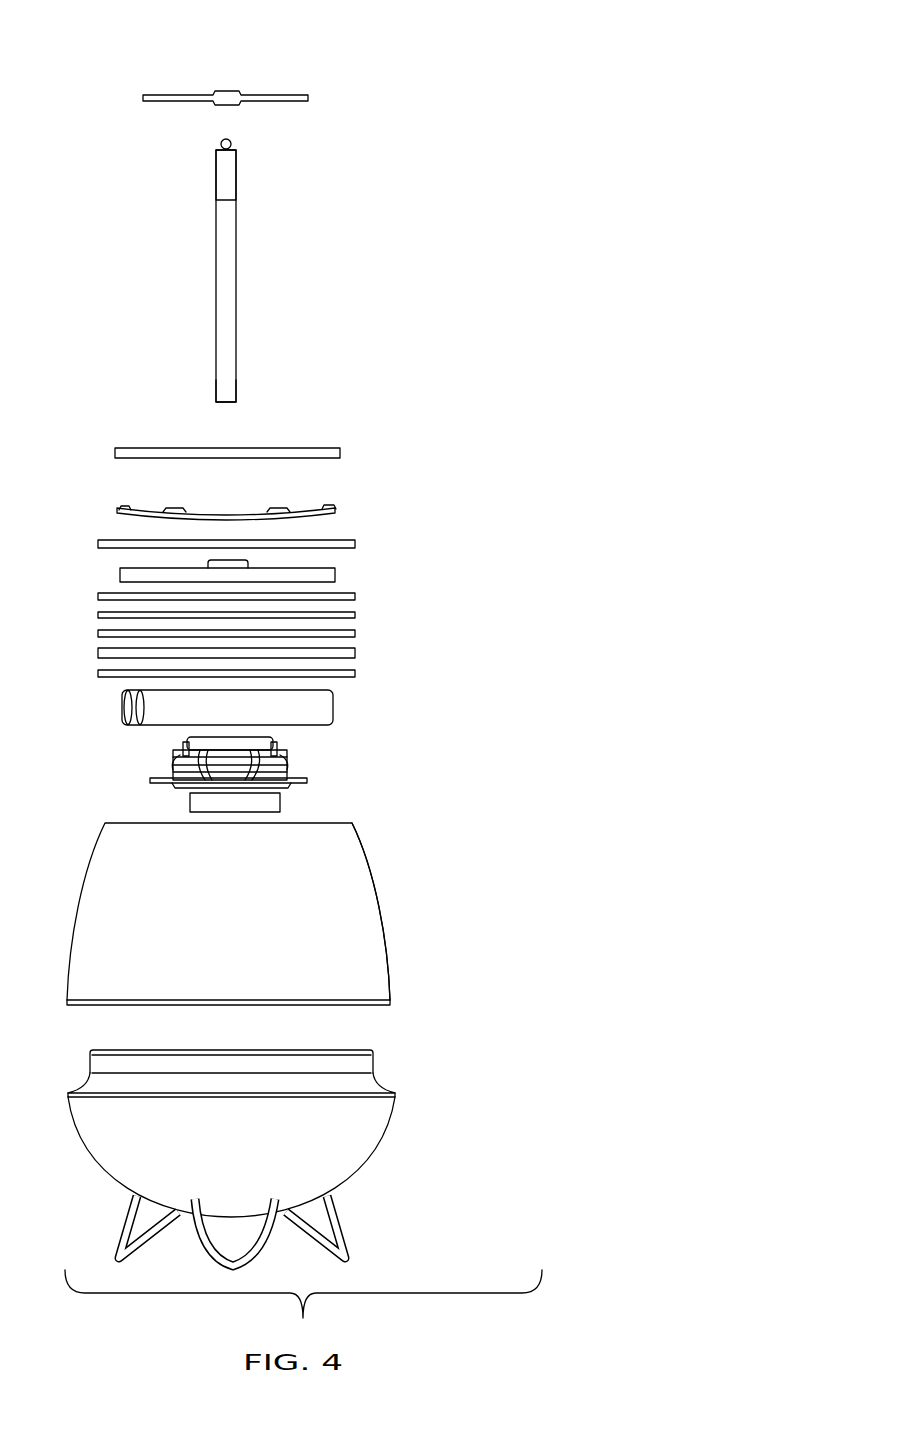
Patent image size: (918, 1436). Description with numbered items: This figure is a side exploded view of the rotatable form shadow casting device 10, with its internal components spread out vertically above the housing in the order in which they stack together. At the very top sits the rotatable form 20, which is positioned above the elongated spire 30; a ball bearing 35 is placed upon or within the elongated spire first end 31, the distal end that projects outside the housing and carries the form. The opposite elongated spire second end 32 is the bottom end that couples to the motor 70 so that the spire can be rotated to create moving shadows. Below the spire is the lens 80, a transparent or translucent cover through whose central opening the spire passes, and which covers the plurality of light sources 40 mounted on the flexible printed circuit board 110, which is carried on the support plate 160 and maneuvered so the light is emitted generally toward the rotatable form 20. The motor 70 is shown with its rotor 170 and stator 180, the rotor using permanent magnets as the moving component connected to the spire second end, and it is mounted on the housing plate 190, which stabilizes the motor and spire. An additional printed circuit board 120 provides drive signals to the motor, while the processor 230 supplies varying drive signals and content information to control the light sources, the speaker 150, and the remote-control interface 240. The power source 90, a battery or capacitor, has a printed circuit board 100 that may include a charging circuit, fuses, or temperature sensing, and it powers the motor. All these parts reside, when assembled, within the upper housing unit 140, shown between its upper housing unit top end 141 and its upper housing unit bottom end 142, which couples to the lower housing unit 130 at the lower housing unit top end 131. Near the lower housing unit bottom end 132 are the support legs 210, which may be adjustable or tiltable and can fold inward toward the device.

The rotatable form shadow casting device 10 is at (553, 72).
The rotatable form 20 is at (308, 97).
The elongated spire 30 is at (237, 268).
The elongated spire first end 31 is at (245, 174).
The elongated spire second end 32 is at (248, 401).
The ball bearing 35 is at (236, 143).
The light sources 40 is at (115, 506).
The motor 70 is at (337, 570).
The lens 80 is at (329, 443).
The power source 90 is at (334, 716).
The printed circuit board 100 is at (357, 674).
The flexible printed circuit board 110 is at (340, 510).
The additional printed circuit board 120 is at (357, 615).
The lower housing unit 130 is at (396, 1106).
The lower housing unit top end 131 is at (385, 1063).
The lower housing unit bottom end 132 is at (397, 1168).
The upper housing unit 140 is at (386, 920).
The upper housing unit top end 141 is at (392, 860).
The upper housing unit bottom end 142 is at (402, 997).
The speaker 150 is at (292, 762).
The support plate 160 is at (358, 543).
The rotor 170 is at (250, 563).
The stator 180 is at (357, 596).
The housing plate 190 is at (357, 653).
The support legs 210 is at (343, 1222).
The processor 230 is at (357, 634).
The remote-control interface 240 is at (282, 798).